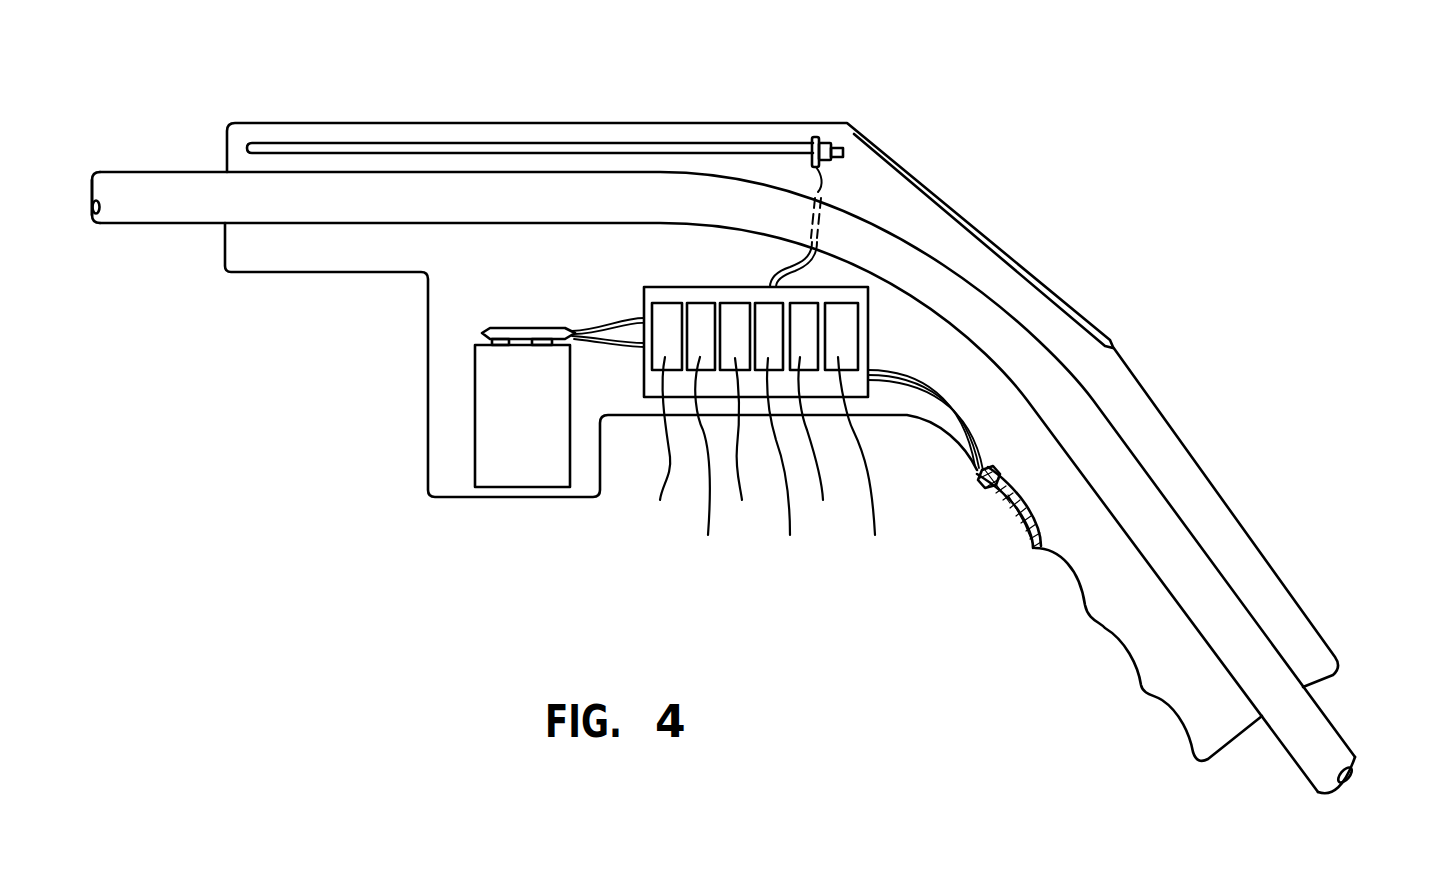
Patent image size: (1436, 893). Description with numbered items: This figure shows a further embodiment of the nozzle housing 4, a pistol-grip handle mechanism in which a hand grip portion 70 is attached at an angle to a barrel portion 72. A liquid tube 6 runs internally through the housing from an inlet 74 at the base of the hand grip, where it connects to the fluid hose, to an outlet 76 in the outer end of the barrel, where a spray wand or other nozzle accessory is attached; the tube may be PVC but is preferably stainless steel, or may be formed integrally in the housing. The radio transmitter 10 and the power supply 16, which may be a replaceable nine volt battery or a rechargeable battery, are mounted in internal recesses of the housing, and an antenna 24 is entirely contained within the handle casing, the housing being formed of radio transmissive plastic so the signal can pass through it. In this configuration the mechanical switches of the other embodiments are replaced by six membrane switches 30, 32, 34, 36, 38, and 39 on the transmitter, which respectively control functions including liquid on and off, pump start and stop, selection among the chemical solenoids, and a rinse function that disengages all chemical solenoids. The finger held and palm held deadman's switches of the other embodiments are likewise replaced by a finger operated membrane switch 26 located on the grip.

The nozzle housing 4 is at (1118, 287).
The liquid tube 6 is at (1177, 533).
The radio transmitter 10 is at (837, 287).
The power supply 16 is at (513, 463).
The antenna 24 is at (448, 148).
The finger operated membrane switch 26 is at (1013, 520).
The membrane switch 30 is at (655, 443).
The membrane switch 32 is at (696, 464).
The membrane switch 34 is at (747, 445).
The membrane switch 36 is at (786, 465).
The membrane switch 38 is at (816, 445).
The membrane switch 39 is at (861, 465).
The hand grip portion 70 is at (1297, 613).
The barrel portion 72 is at (320, 123).
The inlet 74 is at (1327, 733).
The outlet 76 is at (153, 207).